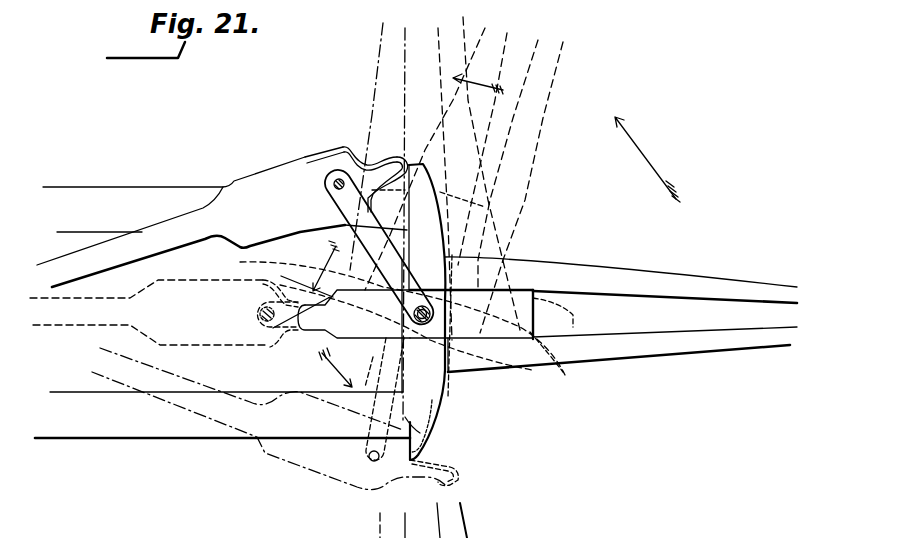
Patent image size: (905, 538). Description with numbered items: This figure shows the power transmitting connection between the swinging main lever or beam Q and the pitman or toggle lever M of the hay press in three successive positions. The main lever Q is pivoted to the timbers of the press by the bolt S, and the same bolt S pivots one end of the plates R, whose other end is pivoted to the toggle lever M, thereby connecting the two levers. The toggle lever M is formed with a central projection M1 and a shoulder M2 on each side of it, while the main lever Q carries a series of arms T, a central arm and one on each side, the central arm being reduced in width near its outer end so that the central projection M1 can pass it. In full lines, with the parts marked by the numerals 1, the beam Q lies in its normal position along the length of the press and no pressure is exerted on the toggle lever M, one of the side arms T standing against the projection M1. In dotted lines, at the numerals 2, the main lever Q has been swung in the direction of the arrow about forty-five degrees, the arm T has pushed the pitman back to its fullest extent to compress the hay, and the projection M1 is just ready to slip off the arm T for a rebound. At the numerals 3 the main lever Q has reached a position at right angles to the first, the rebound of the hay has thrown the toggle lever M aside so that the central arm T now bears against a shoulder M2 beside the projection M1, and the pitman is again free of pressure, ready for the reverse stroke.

The toggle lever M is at (258, 180).
The central projection M1 is at (391, 159).
The shoulder M2 is at (339, 318).
The plates R is at (389, 400).
The bolt S is at (445, 318).
The arms T is at (420, 207).
The main lever Q is at (393, 92).
The first position 1 is at (468, 250).
The second position 2 is at (362, 219).
The third position 3 is at (450, 264).